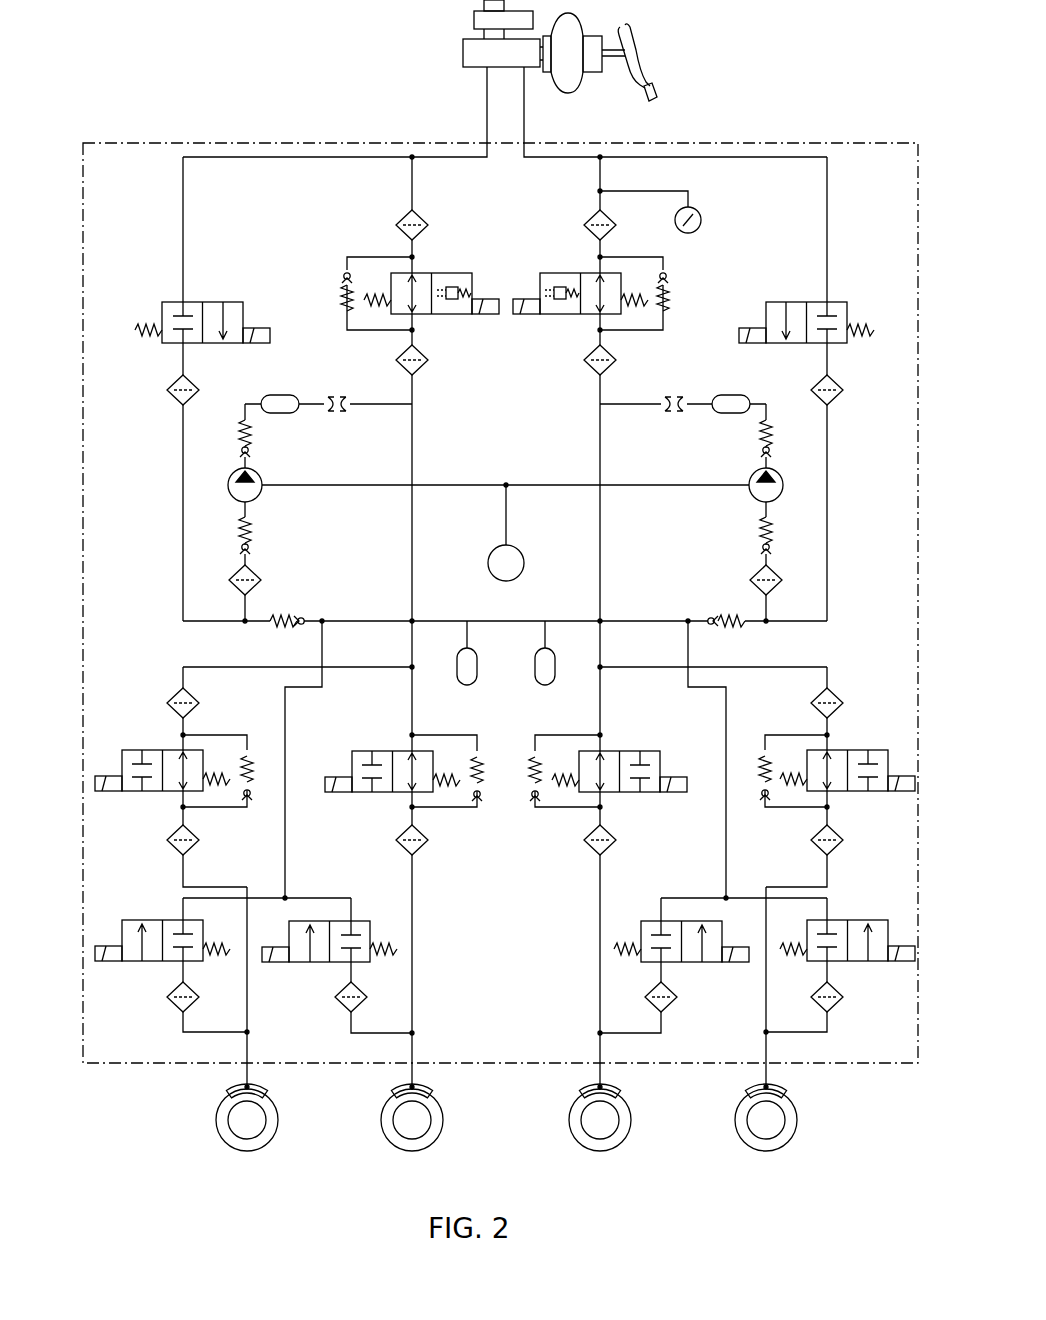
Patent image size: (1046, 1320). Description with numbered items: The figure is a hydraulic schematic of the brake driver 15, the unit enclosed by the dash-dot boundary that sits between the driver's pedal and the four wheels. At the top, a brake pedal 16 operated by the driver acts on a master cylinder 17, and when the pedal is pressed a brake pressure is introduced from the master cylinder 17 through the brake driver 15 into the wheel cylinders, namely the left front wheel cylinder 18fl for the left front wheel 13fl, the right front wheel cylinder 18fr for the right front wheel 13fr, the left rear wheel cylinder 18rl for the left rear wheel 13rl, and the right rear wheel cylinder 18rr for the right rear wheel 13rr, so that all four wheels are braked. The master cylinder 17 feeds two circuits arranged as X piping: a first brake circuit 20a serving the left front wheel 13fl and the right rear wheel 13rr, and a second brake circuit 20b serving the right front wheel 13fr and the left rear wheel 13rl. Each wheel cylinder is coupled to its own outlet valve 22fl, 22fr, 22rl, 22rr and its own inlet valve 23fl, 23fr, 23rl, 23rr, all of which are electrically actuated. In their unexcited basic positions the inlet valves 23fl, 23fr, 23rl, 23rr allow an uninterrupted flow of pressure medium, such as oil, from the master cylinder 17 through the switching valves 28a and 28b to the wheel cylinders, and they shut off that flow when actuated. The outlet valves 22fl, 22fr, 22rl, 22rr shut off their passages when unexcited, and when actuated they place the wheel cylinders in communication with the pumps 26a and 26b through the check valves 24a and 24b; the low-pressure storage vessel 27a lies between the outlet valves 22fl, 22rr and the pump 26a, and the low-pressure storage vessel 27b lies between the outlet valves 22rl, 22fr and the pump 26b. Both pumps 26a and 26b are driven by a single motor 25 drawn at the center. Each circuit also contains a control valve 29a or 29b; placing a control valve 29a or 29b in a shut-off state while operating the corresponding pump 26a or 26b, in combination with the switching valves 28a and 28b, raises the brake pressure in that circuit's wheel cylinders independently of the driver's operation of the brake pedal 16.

The left front wheel 13fl is at (250, 1151).
The right rear wheel 13rr is at (415, 1151).
The left rear wheel 13rl is at (602, 1151).
The right front wheel 13fr is at (768, 1151).
The brake driver 15 is at (815, 143).
The brake pedal 16 is at (655, 70).
The master cylinder 17 is at (463, 52).
The left front wheel cylinder 18fl is at (225, 1092).
The right rear wheel cylinder 18rr is at (390, 1092).
The left rear wheel cylinder 18rl is at (625, 1090).
The right front wheel cylinder 18fr is at (790, 1090).
The first brake circuit 20a is at (423, 152).
The second brake circuit 20b is at (579, 152).
The outlet valve 22fl is at (157, 967).
The outlet valve 22rr is at (322, 967).
The outlet valve 22rl is at (700, 967).
The outlet valve 22fr is at (865, 967).
The inlet valve 23fl is at (157, 798).
The inlet valve 23rr is at (385, 798).
The inlet valve 23rl is at (633, 798).
The inlet valve 23fr is at (855, 798).
The check valve 24a is at (285, 612).
The check valve 24b is at (728, 612).
The motor 25 is at (512, 548).
The pump 26a is at (258, 472).
The pump 26b is at (752, 472).
The low-pressure storage vessel 27a is at (467, 688).
The low-pressure storage vessel 27b is at (545, 688).
The switching valve 28a is at (440, 316).
The switching valve 28b is at (572, 316).
The control valve 29a is at (205, 300).
The control valve 29b is at (806, 300).